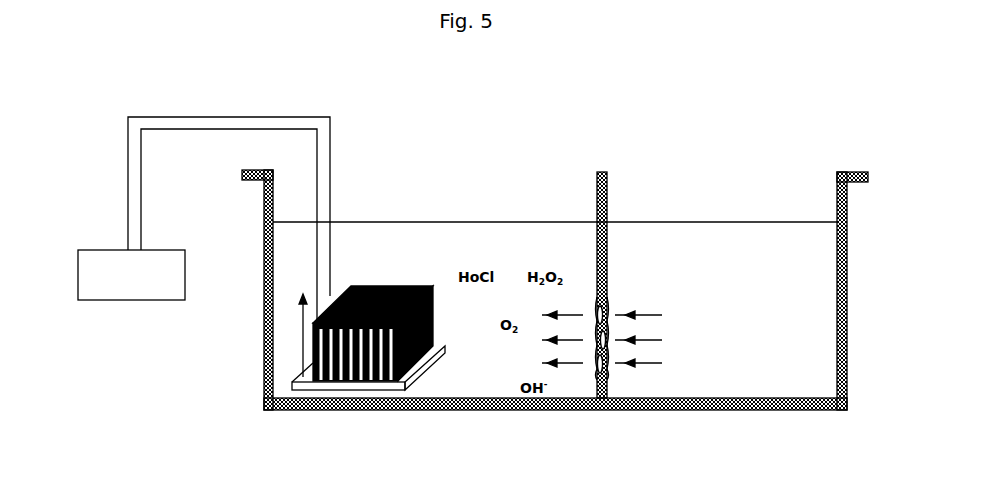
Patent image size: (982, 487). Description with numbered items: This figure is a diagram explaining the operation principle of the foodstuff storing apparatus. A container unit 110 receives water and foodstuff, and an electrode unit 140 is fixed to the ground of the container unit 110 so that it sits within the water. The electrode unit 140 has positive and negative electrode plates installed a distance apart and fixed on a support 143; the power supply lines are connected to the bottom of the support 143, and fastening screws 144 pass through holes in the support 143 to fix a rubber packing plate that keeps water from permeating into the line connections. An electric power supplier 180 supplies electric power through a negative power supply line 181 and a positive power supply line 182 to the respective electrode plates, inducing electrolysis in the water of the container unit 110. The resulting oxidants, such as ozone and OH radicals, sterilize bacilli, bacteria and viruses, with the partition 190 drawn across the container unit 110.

The container unit 110 is at (607, 193).
The electrode unit 140 is at (388, 266).
The support 143 is at (409, 386).
The fastening screws 144 is at (432, 268).
The power supplier 180 is at (135, 300).
The first wire 181 is at (195, 117).
The second wire 182 is at (255, 129).
The porous membrane portion 190 is at (586, 257).